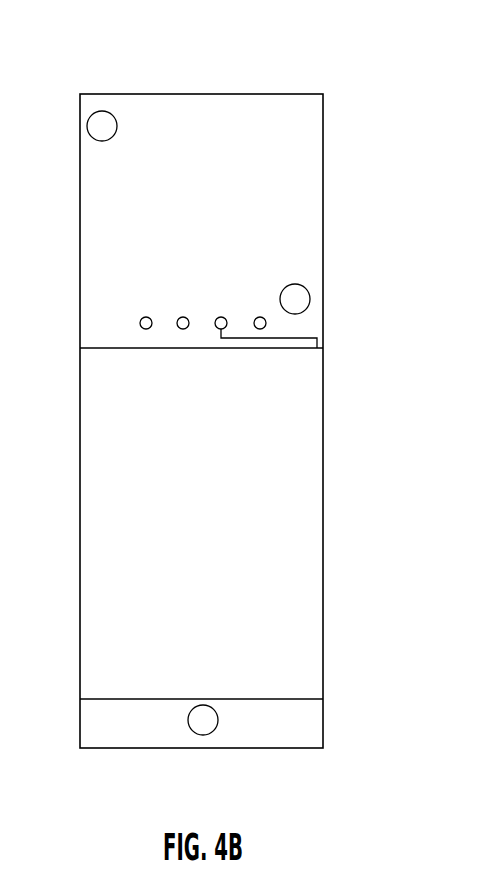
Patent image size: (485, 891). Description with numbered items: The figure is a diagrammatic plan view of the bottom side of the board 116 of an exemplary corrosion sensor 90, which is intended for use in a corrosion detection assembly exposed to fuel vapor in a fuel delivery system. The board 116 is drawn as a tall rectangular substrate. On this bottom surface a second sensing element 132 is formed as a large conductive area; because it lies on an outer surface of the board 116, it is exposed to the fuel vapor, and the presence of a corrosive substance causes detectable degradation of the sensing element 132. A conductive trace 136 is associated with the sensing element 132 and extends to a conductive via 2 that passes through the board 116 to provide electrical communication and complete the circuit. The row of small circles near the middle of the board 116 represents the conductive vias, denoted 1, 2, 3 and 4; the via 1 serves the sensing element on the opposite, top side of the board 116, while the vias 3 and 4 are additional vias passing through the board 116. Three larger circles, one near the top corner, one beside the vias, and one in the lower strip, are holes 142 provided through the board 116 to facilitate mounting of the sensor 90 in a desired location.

The corrosion sensor 90 is at (62, 229).
The board 116 is at (310, 194).
The second sensing element 132 is at (312, 421).
The conductive trace 136 is at (308, 338).
The holes 142 is at (102, 111).
The conductive via 1 is at (260, 308).
The conductive via 2 is at (221, 308).
The conductive via 3 is at (183, 308).
The conductive via 4 is at (146, 308).